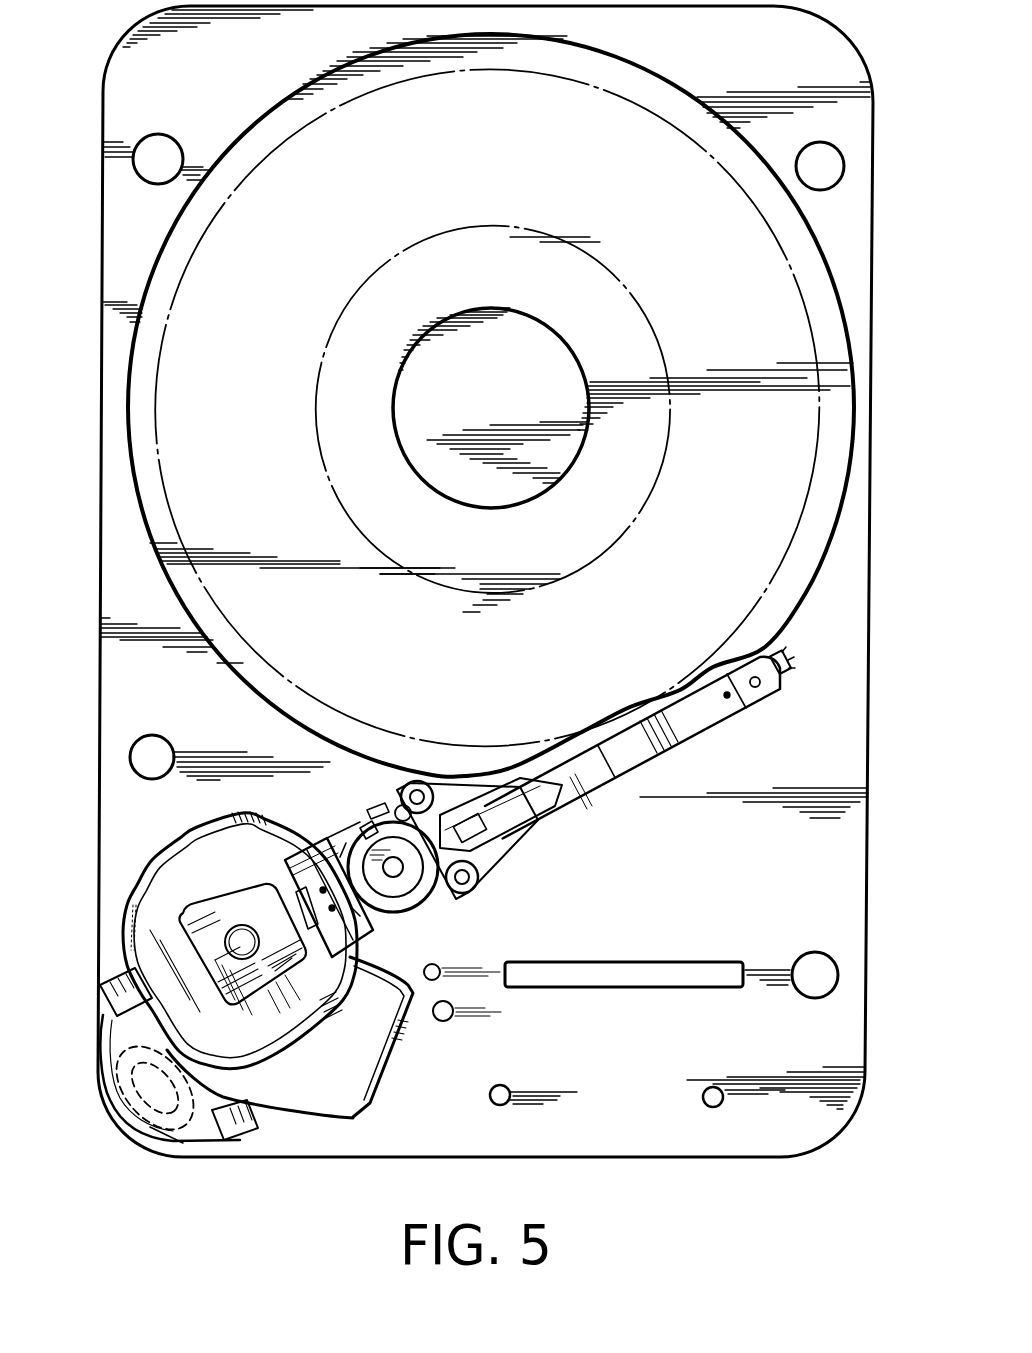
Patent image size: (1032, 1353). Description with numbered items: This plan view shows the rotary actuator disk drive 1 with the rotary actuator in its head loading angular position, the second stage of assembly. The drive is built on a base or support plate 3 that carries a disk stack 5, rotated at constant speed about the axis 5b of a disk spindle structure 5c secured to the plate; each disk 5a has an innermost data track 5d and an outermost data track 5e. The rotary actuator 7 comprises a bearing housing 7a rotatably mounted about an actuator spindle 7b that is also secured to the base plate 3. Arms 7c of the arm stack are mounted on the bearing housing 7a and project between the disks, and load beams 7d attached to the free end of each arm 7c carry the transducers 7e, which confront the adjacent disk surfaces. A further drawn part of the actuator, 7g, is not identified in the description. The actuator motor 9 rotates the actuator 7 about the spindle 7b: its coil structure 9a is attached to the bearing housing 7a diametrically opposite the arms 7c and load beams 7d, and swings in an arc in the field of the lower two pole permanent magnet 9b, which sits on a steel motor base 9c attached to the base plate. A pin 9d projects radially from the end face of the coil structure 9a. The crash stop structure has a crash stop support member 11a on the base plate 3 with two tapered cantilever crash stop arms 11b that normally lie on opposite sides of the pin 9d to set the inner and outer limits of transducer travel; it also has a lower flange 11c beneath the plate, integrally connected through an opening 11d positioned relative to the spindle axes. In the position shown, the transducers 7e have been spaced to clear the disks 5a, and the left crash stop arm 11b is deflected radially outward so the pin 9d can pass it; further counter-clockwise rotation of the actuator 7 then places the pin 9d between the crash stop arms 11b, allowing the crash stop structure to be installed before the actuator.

The rotary actuator disk drive 1 is at (872, 563).
The base or support plate 3 is at (843, 684).
The disk stack 5 is at (758, 286).
The disk 5a is at (855, 402).
The axis of disk spindle 5b is at (489, 405).
The disk spindle structure 5c is at (563, 346).
The innermost data track 5d is at (318, 355).
The outermost data track 5e is at (169, 458).
The rotary actuator 7 is at (540, 788).
The bearing housing 7a is at (445, 886).
The actuator spindle 7b is at (412, 893).
The arms 7c is at (506, 780).
The load beams 7d is at (628, 722).
The transducer 7e is at (764, 658).
The coil 7g is at (350, 960).
The actuator motor 9 is at (312, 974).
The coil structure 9a is at (320, 1028).
The permanent magnet 9b is at (362, 1048).
The steel motor base 9c is at (400, 1040).
The pin 9d is at (205, 930).
The crash stop support member 11a is at (110, 1105).
The crash stop arms 11b is at (142, 940).
The lower flange 11c is at (183, 1141).
The opening 11d is at (139, 1140).